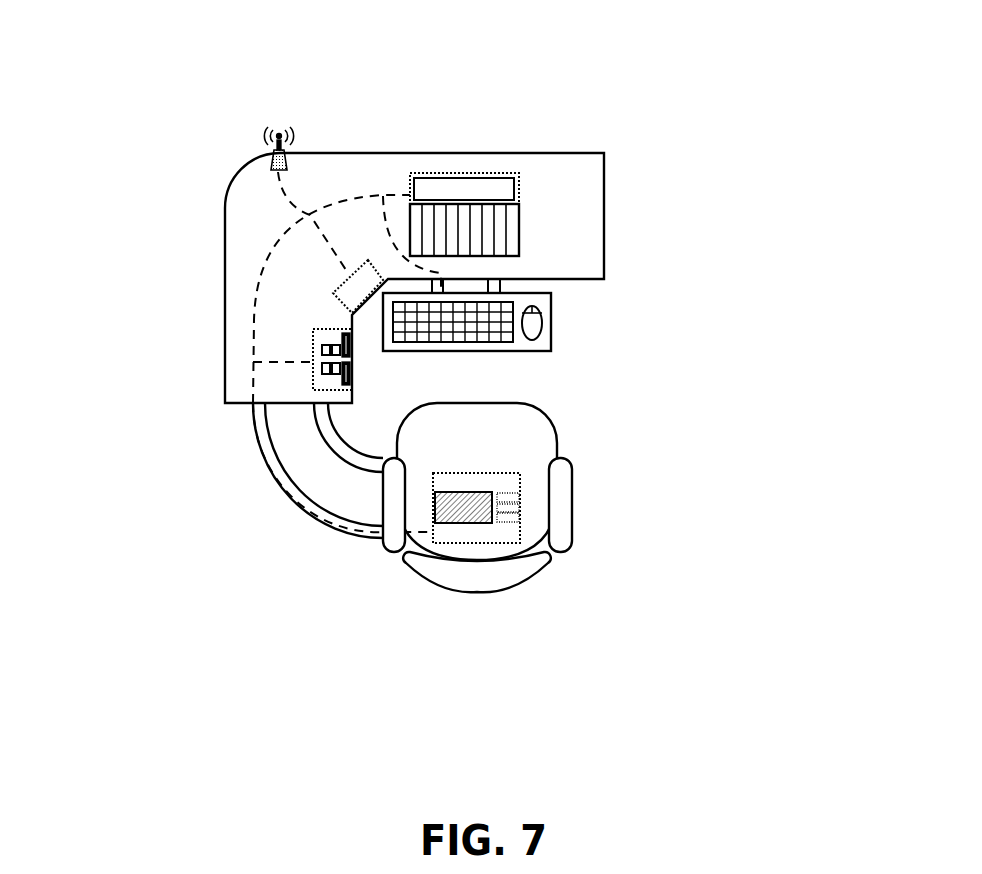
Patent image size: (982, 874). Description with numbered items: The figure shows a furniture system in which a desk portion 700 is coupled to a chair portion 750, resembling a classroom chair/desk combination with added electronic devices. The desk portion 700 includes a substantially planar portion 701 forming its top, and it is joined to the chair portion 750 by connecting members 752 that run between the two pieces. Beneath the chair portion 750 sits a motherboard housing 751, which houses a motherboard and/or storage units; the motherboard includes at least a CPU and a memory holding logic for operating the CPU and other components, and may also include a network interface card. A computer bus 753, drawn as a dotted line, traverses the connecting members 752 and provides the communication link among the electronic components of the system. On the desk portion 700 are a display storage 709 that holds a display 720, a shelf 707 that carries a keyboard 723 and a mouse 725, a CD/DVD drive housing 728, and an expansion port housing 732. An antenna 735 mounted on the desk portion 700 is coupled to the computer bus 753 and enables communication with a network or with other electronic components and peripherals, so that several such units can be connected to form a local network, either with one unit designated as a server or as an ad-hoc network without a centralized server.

The desk portion 700 is at (428, 302).
The substantially planar portion 701 is at (572, 212).
The shelf 707 is at (561, 326).
The display storage 709 is at (554, 152).
The display 720 is at (490, 108).
The keyboard 723 is at (516, 348).
The mouse 725 is at (594, 331).
The CD/DVD drive housing 728 is at (251, 252).
The expansion port housing 732 is at (232, 322).
The antenna 735 is at (336, 124).
The chair portion 750 is at (558, 497).
The motherboard housing 751 is at (566, 475).
The connecting members 752 is at (275, 461).
The computer bus 753 is at (233, 468).